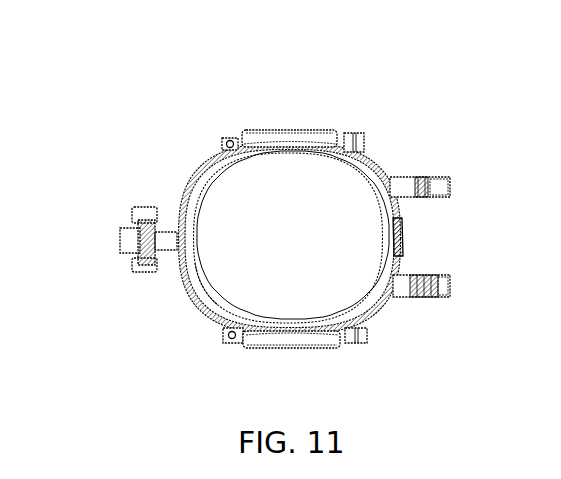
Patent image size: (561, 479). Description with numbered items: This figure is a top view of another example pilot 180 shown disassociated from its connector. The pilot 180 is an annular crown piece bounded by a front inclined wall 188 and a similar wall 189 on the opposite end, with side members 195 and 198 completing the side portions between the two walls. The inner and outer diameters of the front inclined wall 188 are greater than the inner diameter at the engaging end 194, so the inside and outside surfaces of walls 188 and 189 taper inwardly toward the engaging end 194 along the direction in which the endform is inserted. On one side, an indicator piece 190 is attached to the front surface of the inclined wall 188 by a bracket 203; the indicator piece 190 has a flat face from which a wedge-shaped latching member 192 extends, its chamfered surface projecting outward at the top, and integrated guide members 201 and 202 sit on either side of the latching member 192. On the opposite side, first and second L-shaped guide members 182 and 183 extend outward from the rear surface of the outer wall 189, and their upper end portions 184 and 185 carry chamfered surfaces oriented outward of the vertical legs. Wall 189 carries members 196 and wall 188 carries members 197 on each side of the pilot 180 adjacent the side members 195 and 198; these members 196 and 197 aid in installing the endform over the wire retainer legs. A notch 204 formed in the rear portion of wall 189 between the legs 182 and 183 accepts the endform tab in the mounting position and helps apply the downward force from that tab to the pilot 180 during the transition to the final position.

The pilot 180 is at (172, 98).
The first L-shaped guide member 182 is at (400, 178).
The second L-shaped guide member 183 is at (408, 292).
The end portion 184 is at (437, 194).
The end portion 185 is at (440, 290).
The front inclined wall 188 is at (205, 180).
The wall 189 is at (373, 180).
The indicator piece 190 is at (131, 310).
The latching member 192 is at (120, 238).
The engaging end 194 is at (212, 294).
The side member 195 is at (267, 348).
The member 196 is at (350, 133).
The member 197 is at (230, 140).
The side member 198 is at (279, 132).
The guide member 201 is at (142, 207).
The guide member 202 is at (142, 270).
The bracket 203 is at (164, 232).
The notch 204 is at (398, 240).